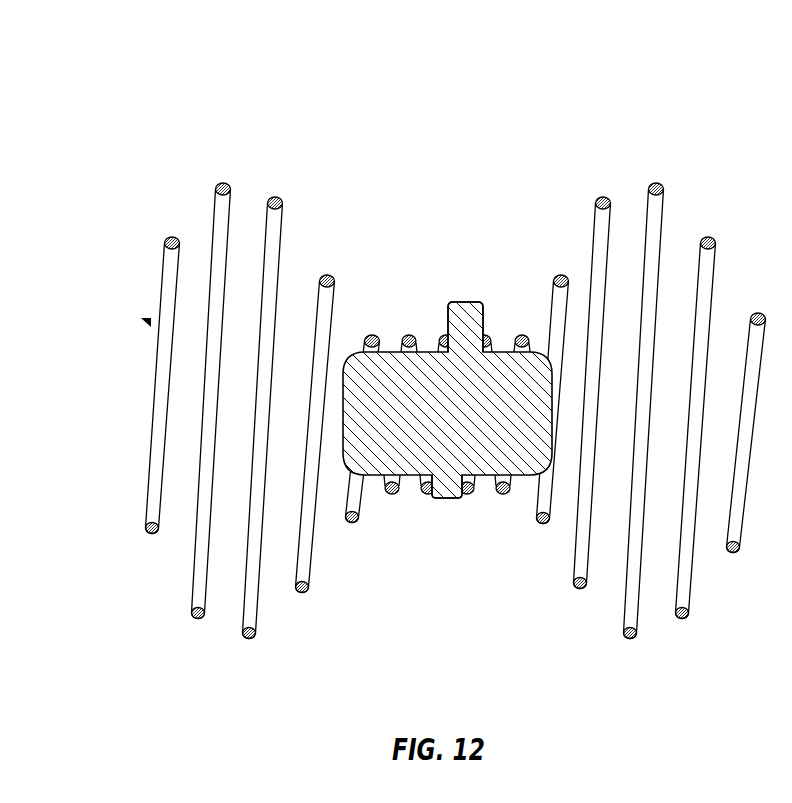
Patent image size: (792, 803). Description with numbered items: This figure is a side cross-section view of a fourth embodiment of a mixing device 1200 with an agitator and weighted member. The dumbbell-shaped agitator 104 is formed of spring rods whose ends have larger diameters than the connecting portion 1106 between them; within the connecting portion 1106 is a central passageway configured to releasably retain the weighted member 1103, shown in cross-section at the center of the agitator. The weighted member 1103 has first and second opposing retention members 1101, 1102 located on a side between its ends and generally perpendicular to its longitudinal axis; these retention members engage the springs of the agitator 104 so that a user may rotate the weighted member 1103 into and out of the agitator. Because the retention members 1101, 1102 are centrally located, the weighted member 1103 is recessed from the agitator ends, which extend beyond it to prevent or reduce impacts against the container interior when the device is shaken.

The connector assembly 1200 is at (133, 61).
The dumbbell-shaped agitator 104 is at (228, 212).
The weighted member 1103 is at (423, 352).
The second retention member 1102 is at (478, 328).
The first retention member 1101 is at (449, 490).
The connecting portion 1106 is at (430, 442).